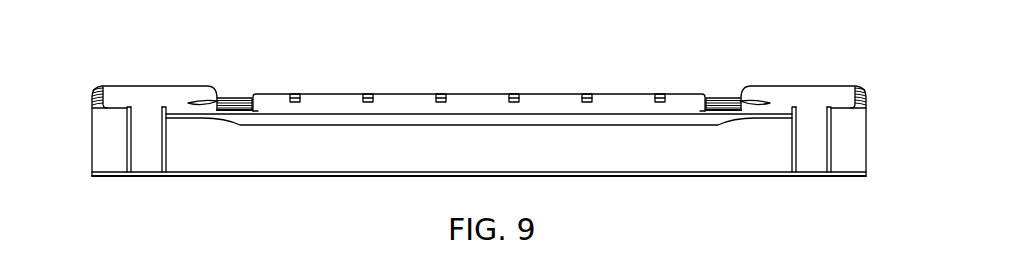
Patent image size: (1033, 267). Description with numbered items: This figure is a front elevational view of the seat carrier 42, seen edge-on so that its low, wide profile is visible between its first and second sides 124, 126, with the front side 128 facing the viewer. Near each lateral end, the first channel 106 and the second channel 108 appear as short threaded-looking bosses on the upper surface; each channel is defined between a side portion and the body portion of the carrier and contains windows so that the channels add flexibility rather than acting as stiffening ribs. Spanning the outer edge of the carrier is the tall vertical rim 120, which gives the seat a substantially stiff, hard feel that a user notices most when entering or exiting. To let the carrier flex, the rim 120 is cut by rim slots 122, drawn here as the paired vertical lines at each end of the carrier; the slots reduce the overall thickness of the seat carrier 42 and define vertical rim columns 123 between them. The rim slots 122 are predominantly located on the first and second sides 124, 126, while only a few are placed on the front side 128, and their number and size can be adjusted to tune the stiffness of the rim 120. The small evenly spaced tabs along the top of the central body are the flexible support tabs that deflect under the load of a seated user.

The seat carrier 42 is at (795, 56).
The first channel 106 is at (235, 96).
The second channel 108 is at (722, 96).
The rim 120 is at (473, 93).
The rim slots 122 is at (128, 175).
The vertical rim columns 123 is at (150, 143).
The first side 124 is at (92, 135).
The second side 126 is at (866, 132).
The front side 128 is at (365, 155).